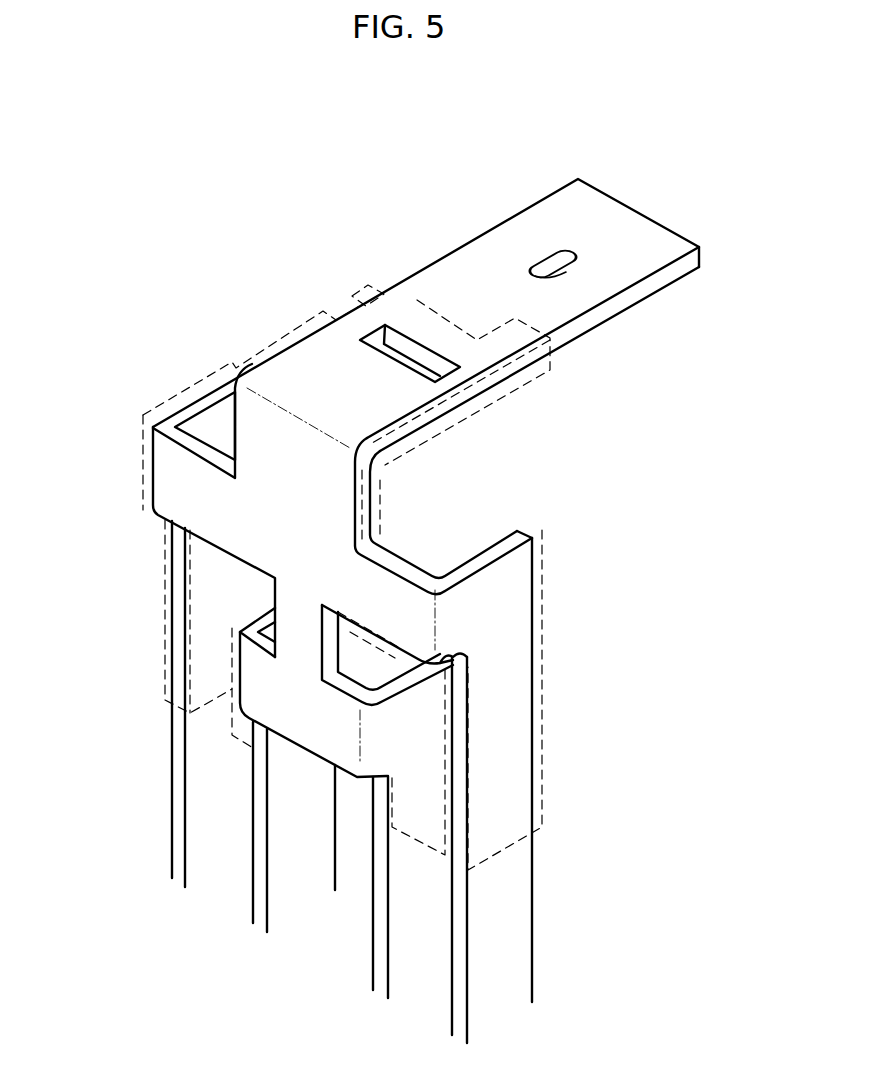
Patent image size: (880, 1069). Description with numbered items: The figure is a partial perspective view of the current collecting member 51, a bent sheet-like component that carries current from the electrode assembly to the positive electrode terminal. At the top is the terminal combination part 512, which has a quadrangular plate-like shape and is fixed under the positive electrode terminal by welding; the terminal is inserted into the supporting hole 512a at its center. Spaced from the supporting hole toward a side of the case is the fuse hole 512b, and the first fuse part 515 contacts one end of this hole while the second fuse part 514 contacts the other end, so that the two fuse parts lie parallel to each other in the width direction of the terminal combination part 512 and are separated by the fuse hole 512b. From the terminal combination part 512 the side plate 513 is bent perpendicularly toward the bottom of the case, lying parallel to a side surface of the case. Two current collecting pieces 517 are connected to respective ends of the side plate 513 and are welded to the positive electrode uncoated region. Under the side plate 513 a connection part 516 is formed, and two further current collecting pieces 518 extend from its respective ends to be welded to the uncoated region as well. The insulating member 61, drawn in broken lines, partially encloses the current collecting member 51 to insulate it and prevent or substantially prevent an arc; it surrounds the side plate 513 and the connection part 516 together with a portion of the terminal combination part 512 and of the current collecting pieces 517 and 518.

The current collecting member 51 is at (538, 191).
The terminal combination part 512 is at (500, 243).
The supporting hole 512a is at (574, 268).
The fuse hole 512b is at (407, 333).
The insulating member 61 is at (367, 283).
The side plate 513 is at (295, 497).
The second fuse part 514 is at (352, 314).
The first fuse part 515 is at (460, 378).
The connection part 516 is at (297, 680).
The current collecting pieces 517 is at (493, 898).
The current collecting pieces 518 is at (413, 947).